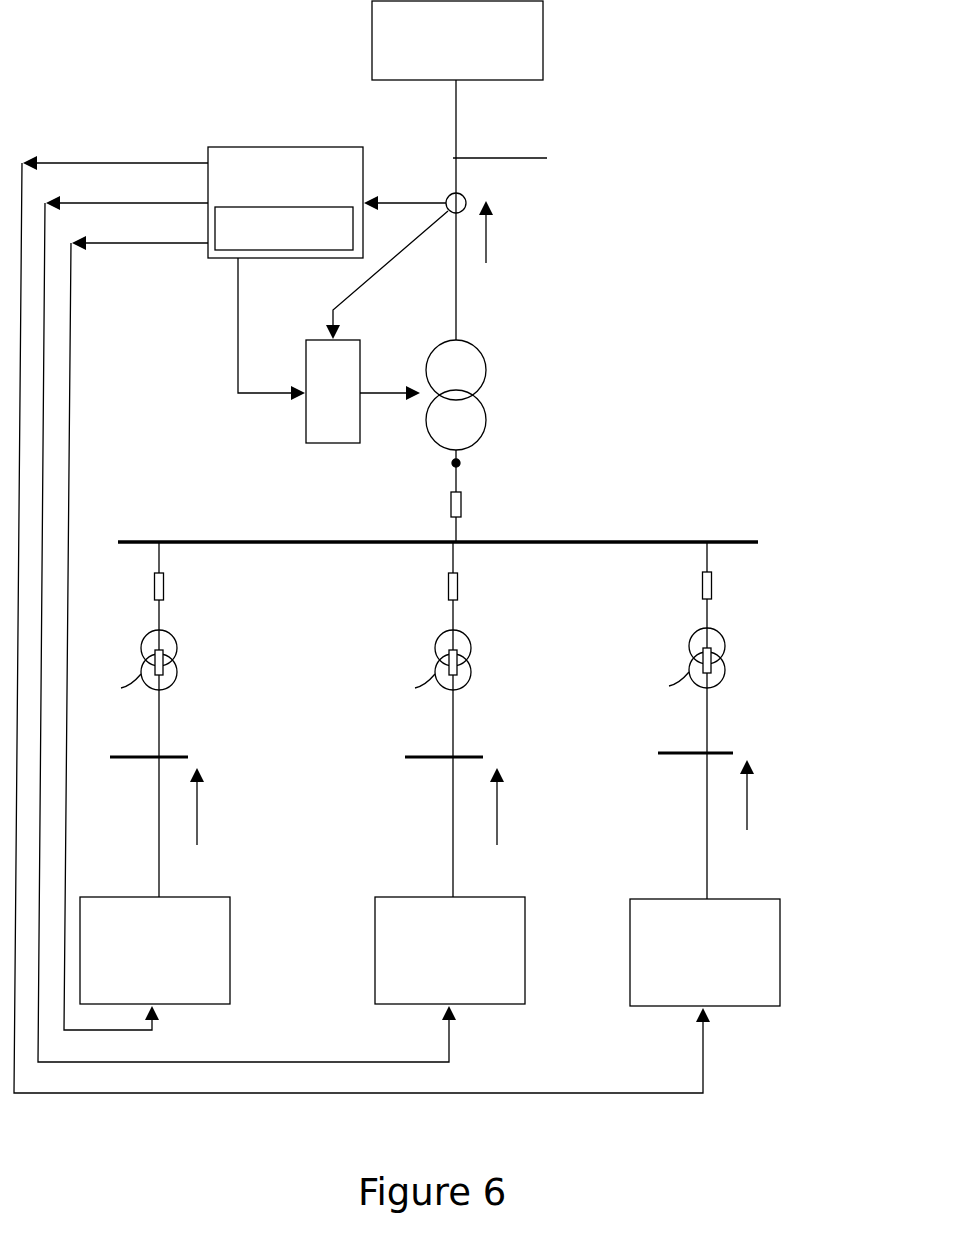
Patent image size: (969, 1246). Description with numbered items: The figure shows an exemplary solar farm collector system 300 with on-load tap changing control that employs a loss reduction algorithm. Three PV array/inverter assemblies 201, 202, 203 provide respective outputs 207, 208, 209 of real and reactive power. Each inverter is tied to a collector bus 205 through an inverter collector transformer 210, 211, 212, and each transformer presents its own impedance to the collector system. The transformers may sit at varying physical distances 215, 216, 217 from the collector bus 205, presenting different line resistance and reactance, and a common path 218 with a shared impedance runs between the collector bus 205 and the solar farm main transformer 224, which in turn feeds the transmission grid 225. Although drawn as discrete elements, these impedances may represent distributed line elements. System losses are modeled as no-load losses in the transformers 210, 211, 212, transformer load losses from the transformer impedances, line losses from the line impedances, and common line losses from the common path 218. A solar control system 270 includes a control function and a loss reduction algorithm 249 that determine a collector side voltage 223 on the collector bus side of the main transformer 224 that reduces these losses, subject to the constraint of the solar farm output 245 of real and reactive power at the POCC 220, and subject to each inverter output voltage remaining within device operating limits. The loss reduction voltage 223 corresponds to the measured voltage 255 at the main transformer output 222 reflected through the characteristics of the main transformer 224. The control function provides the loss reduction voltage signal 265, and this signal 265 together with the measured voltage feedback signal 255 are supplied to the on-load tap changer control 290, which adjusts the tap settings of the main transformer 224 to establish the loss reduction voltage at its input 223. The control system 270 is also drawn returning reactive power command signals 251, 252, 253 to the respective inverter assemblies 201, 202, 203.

The PV array/inverter assembly 201 is at (230, 930).
The PV array/inverter assembly 202 is at (525, 930).
The PV array/inverter assembly 203 is at (780, 930).
The collector bus 205 is at (670, 540).
The inverter output P1+jQ1 207 is at (197, 800).
The inverter output P2+jQ2 208 is at (497, 800).
The inverter output P3+jQ3 209 is at (747, 790).
The inverter collector transformer 210 is at (174, 640).
The inverter collector transformer 211 is at (468, 640).
The inverter collector transformer 212 is at (722, 638).
The physical distance 215 is at (159, 556).
The physical distance 216 is at (453, 556).
The physical distance 217 is at (707, 556).
The common path 218 is at (462, 505).
The POCC 220 is at (547, 158).
The main transformer output 222 is at (456, 308).
The collector bus side voltage VC 223 is at (462, 463).
The solar farm main transformer 224 is at (486, 372).
The transmission grid 225 is at (543, 32).
The solar farm output 245 is at (486, 248).
The loss reduction algorithm 249 is at (212, 258).
The reactive power command Q1 251 is at (136, 621).
The reactive power command Q2 252 is at (243, 617).
The reactive power command Q3 253 is at (358, 612).
The measured voltage VSF 255 is at (390, 274).
The loss reduction voltage signal VLM 265 is at (270, 325).
The solar control system 270 is at (210, 104).
The on-load tap changer control 290 is at (333, 443).
The solar farm power system 300 is at (712, 286).